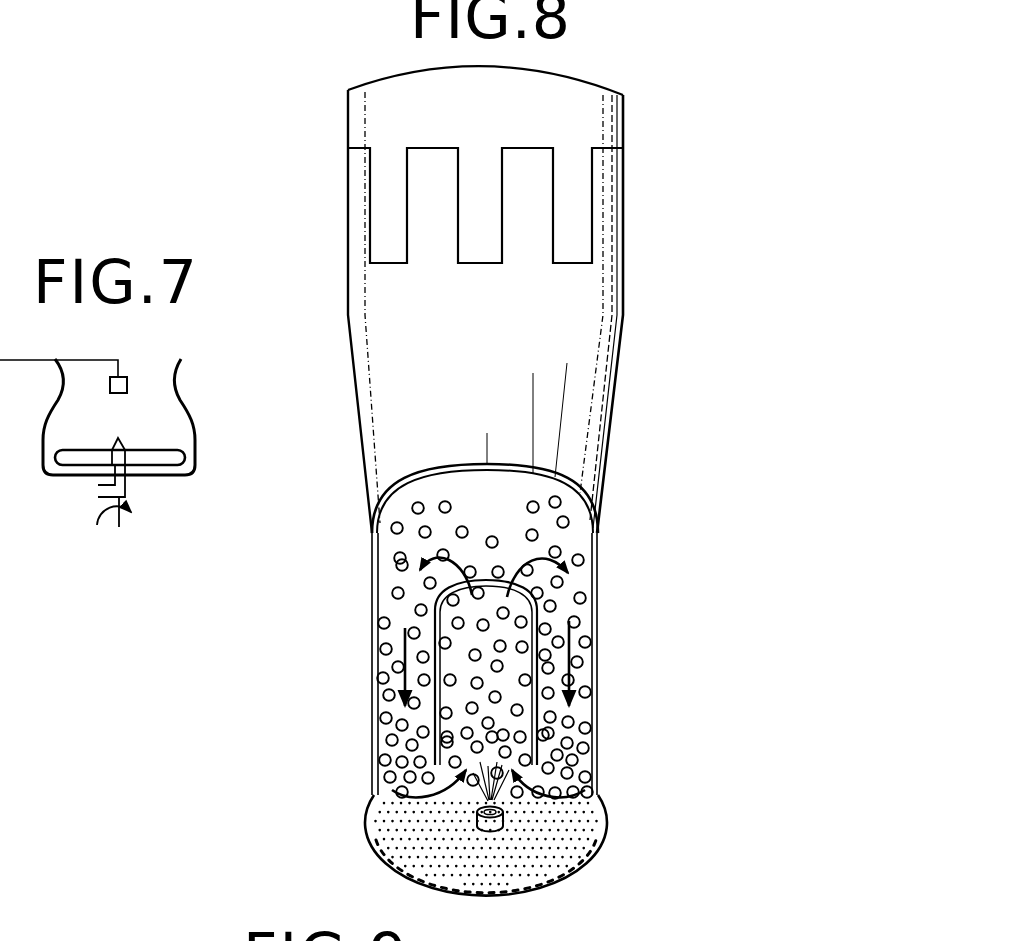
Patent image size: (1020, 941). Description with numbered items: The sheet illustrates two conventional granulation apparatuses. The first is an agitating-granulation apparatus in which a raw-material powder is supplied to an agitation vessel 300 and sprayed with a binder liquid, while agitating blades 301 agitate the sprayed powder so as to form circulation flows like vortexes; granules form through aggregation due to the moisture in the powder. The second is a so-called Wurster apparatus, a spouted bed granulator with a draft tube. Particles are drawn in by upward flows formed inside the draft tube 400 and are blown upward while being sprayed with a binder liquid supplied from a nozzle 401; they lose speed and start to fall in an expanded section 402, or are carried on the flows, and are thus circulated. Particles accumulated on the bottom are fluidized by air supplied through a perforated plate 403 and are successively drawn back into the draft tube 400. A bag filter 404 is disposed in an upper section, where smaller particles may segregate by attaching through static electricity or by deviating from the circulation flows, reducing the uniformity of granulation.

In FIG. 7, the agitation vessel 300 is at (197, 430).
In FIG. 7, the agitating blades 301 is at (68, 458).
In FIG. 8, the draft tube 400 is at (538, 725).
In FIG. 8, the nozzle 401 is at (477, 813).
In FIG. 8, the expanded section 402 is at (545, 490).
In FIG. 8, the perforated plate 403 is at (547, 878).
In FIG. 8, the bag filter 404 is at (573, 180).